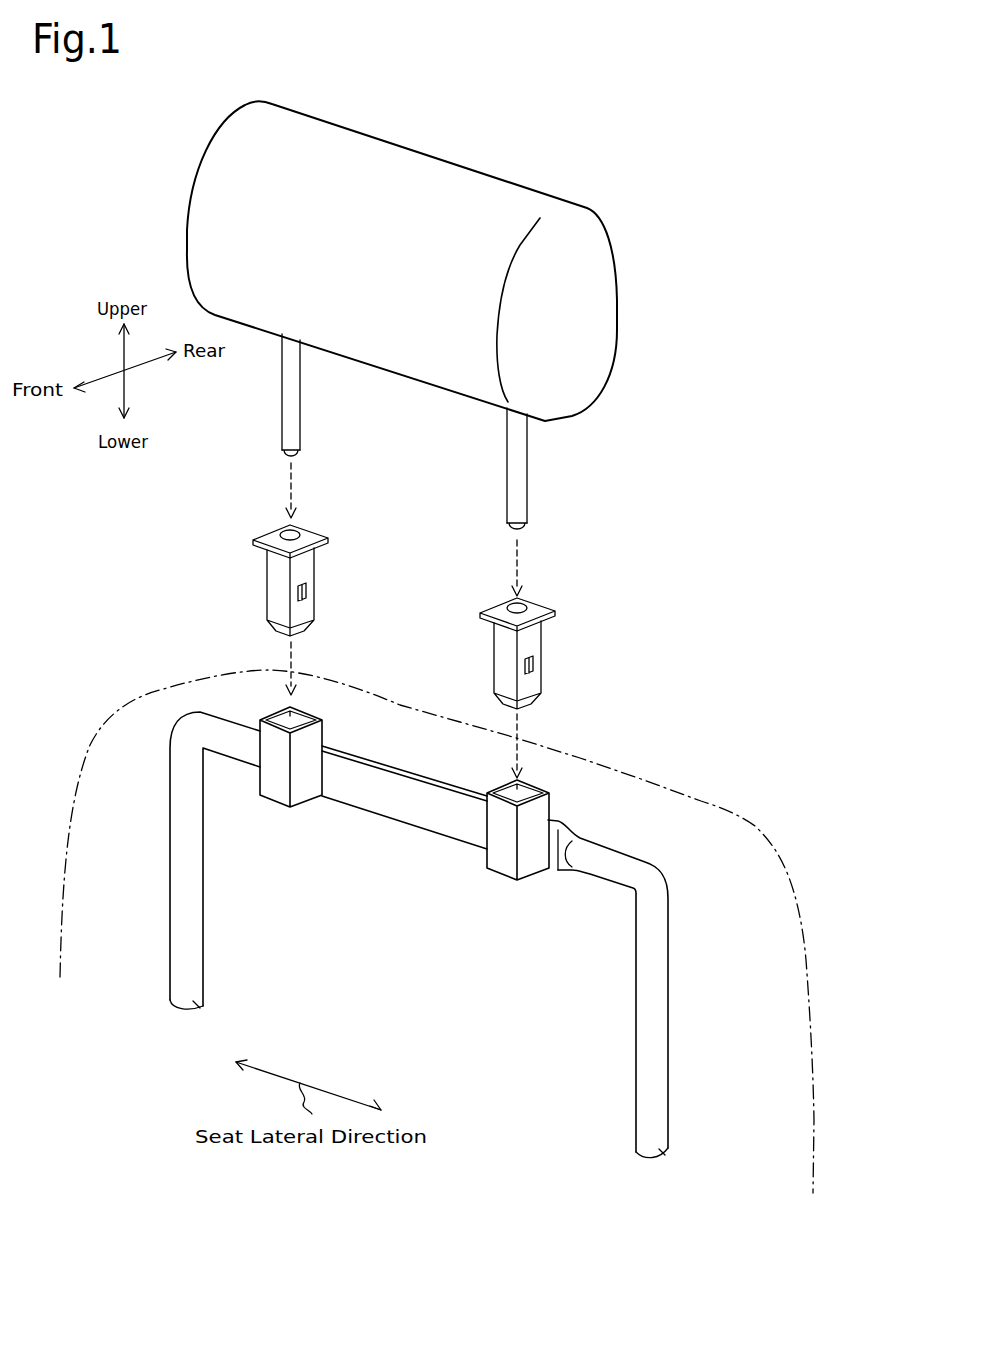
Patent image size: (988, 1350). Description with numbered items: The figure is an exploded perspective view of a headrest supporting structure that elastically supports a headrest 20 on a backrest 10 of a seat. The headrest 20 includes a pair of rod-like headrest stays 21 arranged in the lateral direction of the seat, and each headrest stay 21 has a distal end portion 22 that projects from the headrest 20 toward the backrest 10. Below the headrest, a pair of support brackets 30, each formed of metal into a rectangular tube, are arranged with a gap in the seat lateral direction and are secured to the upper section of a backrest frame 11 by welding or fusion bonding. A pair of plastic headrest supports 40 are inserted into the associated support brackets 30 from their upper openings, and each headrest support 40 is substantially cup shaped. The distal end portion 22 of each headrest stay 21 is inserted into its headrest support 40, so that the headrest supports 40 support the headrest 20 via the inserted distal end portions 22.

The backrest 10 is at (168, 686).
The backrest frame 11 is at (640, 1002).
The headrest 20 is at (617, 290).
The headrest stay 21 is at (287, 395).
The distal end portion 22 is at (283, 431).
The support bracket 30 is at (275, 778).
The headrest support 40 is at (309, 570).